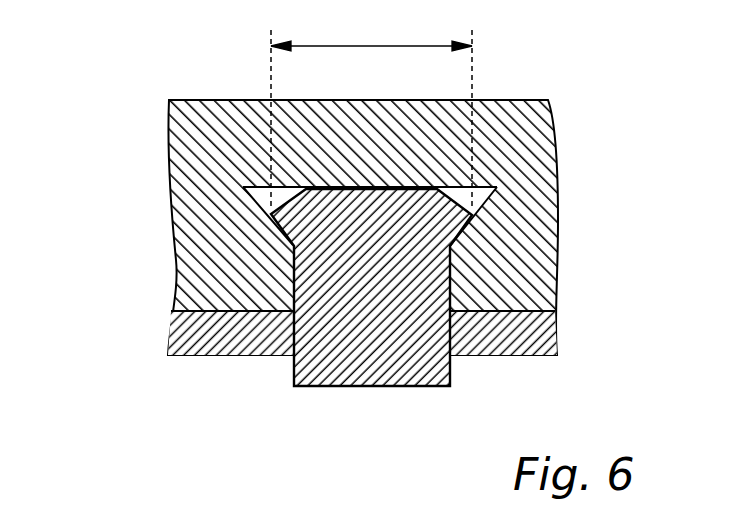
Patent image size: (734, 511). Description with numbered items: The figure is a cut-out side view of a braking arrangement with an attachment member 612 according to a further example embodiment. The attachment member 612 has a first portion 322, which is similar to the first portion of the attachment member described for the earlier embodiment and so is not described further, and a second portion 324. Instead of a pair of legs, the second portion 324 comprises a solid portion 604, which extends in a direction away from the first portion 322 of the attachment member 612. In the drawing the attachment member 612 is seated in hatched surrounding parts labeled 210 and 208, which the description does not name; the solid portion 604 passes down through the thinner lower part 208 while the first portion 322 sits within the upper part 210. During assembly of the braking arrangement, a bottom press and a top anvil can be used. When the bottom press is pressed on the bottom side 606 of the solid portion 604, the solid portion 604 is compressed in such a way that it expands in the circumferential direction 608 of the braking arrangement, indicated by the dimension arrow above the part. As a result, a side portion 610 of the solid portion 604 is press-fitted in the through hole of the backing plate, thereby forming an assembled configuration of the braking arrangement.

The first substrate layer 210 is at (207, 143).
The second substrate layer 208 is at (178, 340).
The first portion 322 is at (420, 220).
The attachment member 612 is at (423, 306).
The side portion 610 is at (448, 330).
The second portion 324 is at (422, 355).
The bottom side 606 is at (323, 387).
The solid portion 604 is at (372, 386).
The circumferential direction 608 is at (371, 110).